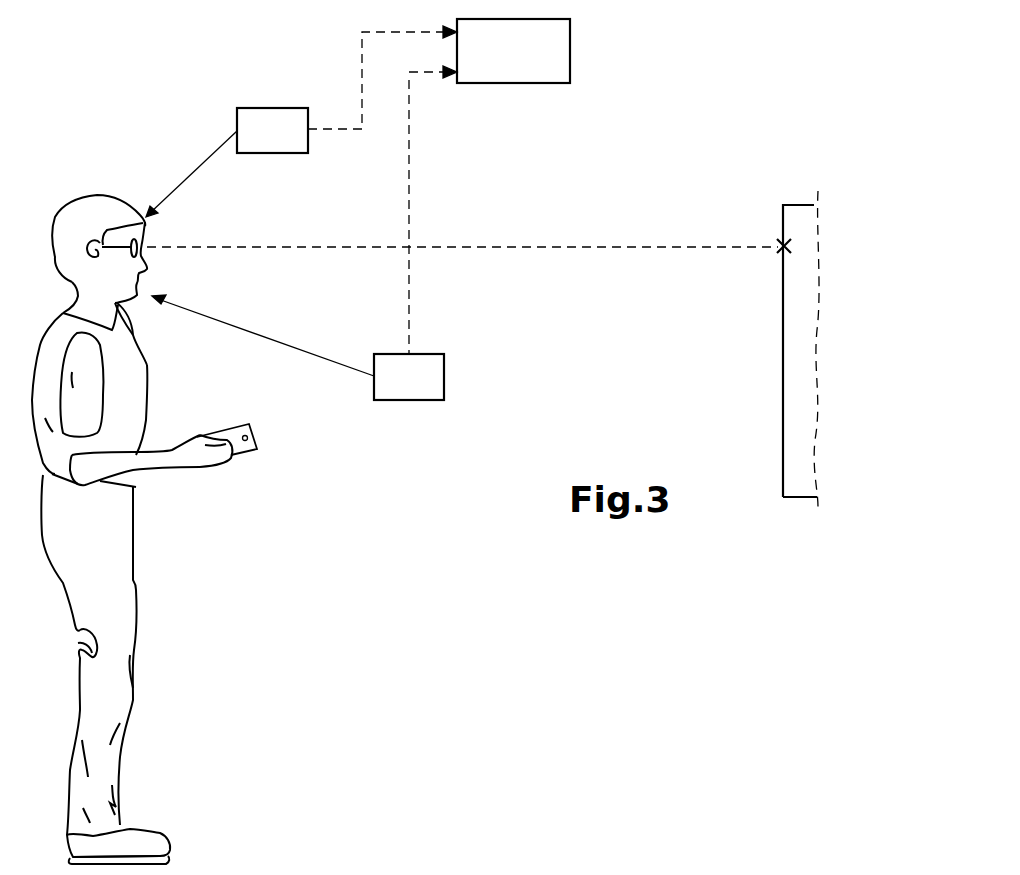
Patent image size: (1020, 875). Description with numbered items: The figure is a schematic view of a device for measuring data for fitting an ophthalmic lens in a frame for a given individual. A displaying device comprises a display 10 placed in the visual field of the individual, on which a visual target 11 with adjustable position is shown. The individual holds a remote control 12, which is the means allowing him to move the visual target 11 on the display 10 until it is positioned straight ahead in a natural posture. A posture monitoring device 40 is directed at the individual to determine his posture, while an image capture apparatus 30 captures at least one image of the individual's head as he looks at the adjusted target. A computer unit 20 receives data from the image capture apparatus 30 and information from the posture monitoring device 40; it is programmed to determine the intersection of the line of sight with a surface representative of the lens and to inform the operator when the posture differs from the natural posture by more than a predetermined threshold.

The display 10 is at (795, 203).
The visual target 11 is at (784, 243).
The remote control 12 is at (240, 457).
The computer unit 20 is at (570, 41).
The image capture apparatus 30 is at (444, 375).
The posture monitoring device 40 is at (273, 108).